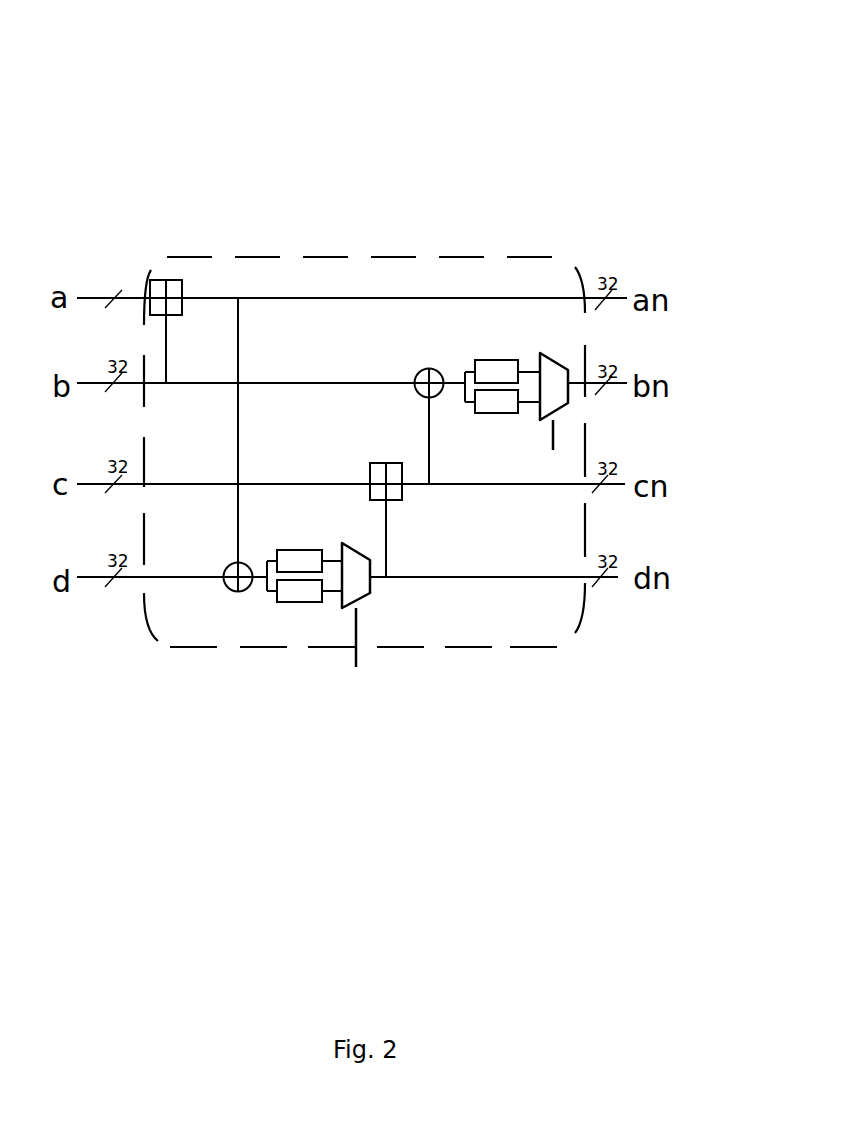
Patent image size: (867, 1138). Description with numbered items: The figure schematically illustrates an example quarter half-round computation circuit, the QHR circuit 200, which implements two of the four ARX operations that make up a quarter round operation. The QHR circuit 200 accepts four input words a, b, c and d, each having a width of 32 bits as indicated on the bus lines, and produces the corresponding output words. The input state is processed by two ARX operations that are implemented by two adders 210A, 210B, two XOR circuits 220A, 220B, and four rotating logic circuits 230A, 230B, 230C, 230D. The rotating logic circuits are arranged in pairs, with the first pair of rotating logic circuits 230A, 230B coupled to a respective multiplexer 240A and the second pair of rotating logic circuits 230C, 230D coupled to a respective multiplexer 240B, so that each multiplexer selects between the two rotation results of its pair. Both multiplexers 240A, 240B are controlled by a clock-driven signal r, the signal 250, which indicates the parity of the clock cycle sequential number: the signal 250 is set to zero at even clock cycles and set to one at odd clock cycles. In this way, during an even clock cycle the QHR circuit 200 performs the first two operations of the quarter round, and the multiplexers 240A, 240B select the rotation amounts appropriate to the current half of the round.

The QHR circuit 200 is at (508, 245).
The adder 210A is at (168, 270).
The adder 210B is at (398, 444).
The XOR circuit 220A is at (447, 353).
The XOR circuit 220B is at (258, 623).
The rotating logic circuit 230A is at (518, 346).
The rotating logic circuit 230B is at (518, 445).
The rotating logic circuit 230C is at (327, 531).
The rotating logic circuit 230D is at (332, 623).
The multiplexer 240A is at (540, 353).
The multiplexer 240B is at (355, 583).
The clock-driven signal r 250 is at (448, 576).
The 32-bit word width 32 is at (117, 289).